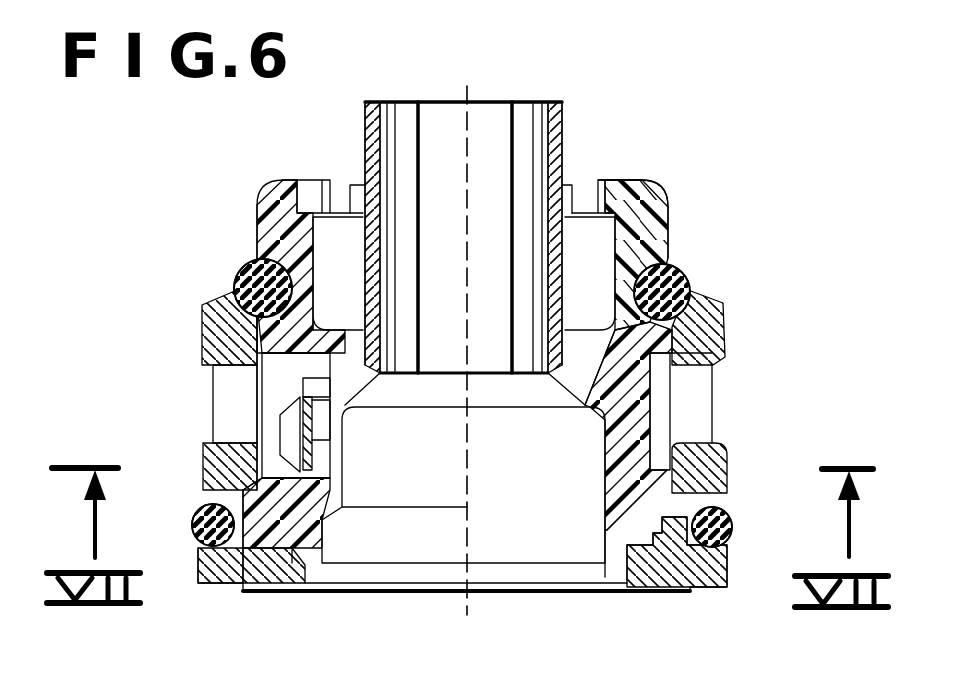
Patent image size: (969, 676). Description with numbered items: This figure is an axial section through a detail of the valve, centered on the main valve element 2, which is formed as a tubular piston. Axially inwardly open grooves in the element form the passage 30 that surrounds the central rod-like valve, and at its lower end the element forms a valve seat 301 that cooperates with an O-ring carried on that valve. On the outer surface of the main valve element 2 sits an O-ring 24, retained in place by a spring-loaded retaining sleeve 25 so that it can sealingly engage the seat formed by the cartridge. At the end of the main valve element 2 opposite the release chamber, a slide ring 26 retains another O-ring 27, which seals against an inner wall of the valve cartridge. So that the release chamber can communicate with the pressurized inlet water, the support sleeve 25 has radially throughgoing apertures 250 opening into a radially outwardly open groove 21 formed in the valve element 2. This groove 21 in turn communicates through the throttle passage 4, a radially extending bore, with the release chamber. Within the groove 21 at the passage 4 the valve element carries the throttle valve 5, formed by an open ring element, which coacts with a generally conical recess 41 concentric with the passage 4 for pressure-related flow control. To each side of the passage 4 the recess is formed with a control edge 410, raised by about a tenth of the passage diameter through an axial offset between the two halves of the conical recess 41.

The main valve element 2 is at (625, 352).
The throttle passage 4 is at (343, 457).
The throttle valve 5 is at (250, 410).
The groove 21 is at (660, 432).
The O-ring 24 is at (672, 262).
The retaining sleeve 25 is at (700, 320).
The slide ring 26 is at (675, 577).
The O-ring 27 is at (730, 515).
The passage 30 is at (538, 130).
The conical recess 41 is at (330, 400).
The apertures 250 is at (710, 387).
The valve seat 301 is at (330, 377).
The control edge 410 is at (287, 443).